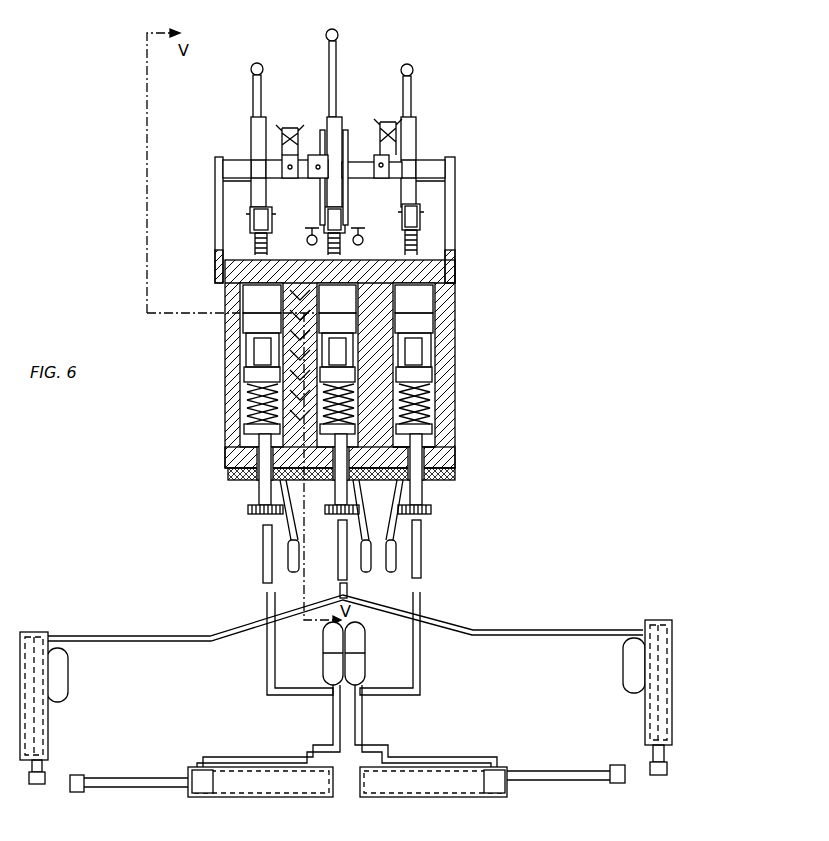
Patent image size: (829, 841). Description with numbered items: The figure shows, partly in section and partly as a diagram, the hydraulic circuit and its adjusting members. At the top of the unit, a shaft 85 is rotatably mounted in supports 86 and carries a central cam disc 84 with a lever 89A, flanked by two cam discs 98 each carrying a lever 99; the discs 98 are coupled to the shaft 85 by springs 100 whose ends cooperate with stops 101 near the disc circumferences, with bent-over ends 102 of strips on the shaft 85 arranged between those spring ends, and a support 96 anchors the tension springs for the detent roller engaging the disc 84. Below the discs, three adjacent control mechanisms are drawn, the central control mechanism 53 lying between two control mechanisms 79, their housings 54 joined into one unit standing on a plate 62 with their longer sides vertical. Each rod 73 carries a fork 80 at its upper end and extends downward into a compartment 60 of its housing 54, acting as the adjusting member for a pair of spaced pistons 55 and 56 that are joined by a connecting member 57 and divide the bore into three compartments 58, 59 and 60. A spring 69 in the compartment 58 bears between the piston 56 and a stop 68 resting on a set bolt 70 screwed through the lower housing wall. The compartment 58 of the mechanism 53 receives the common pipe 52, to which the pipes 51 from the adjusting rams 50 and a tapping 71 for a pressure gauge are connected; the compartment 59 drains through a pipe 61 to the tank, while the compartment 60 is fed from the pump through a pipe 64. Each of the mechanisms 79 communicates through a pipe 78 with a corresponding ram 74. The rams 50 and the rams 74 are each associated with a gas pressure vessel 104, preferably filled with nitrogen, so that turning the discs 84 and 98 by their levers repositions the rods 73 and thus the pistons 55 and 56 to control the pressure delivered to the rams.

The lever 99 is at (252, 82).
The lever 89A is at (338, 46).
The cam disc 84 is at (340, 118).
The cam disc 98 is at (251, 124).
The stop 101 is at (289, 126).
The bent-over end 102 is at (296, 150).
The gas pressure vessel 104 is at (314, 156).
The support 86 is at (215, 198).
The spring 100 is at (280, 178).
The shaft 85 is at (366, 178).
The support 96 is at (310, 232).
The fork 80 is at (258, 247).
The control mechanism 53 is at (302, 262).
The rod 73 is at (362, 272).
The compartment 60 is at (240, 293).
The piston 55 is at (243, 318).
The connecting member 57 is at (254, 350).
The compartment 59 is at (256, 358).
The piston 56 is at (244, 375).
The compartment 58 is at (244, 425).
The stop 68 is at (246, 430).
The spring 69 is at (437, 385).
The control mechanism 79 is at (222, 403).
The plate 62 is at (456, 474).
The housing 54 is at (303, 482).
The set bolt 70 is at (259, 500).
The pipe 61 is at (390, 540).
The tapping 71 is at (263, 565).
The common pipe 52 is at (348, 596).
The pipe 51 is at (165, 634).
The pipe 64 is at (316, 590).
The adjusting cylinder or ram 50 is at (50, 733).
The pipe 78 is at (333, 725).
The ram 74 is at (268, 797).